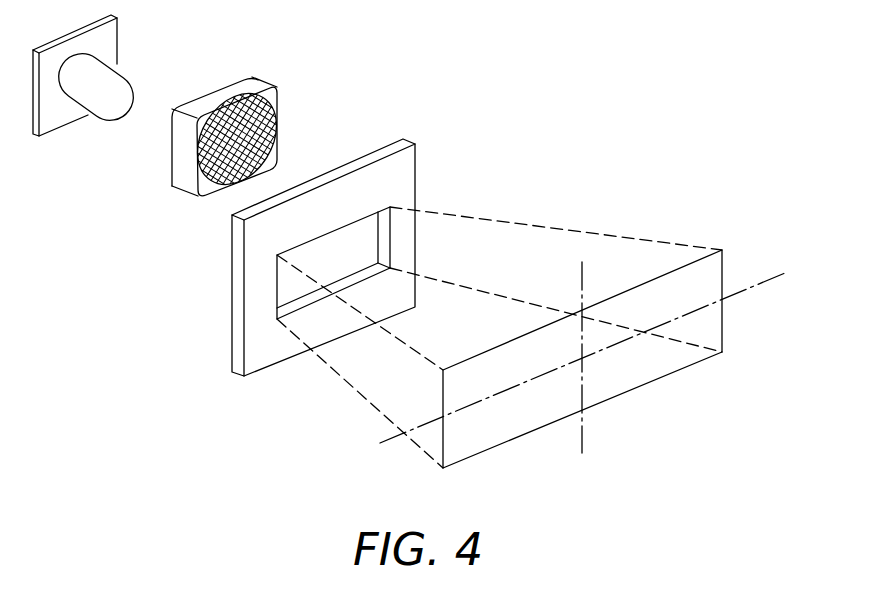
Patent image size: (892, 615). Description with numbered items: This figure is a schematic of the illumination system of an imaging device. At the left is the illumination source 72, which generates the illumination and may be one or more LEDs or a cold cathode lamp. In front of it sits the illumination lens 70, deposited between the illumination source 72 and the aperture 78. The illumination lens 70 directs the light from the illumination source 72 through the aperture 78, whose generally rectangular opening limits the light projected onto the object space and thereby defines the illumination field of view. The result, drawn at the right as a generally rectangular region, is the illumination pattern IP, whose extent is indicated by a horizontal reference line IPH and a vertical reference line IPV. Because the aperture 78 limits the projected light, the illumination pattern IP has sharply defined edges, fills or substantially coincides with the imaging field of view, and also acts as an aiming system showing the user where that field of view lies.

The illumination source 72 is at (120, 70).
The illumination lens 70 is at (258, 83).
The aperture 78 is at (335, 243).
The illumination pattern IP is at (726, 309).
The horizontal image plane axis IPH is at (764, 281).
The vertical image plane axis IPV is at (584, 433).